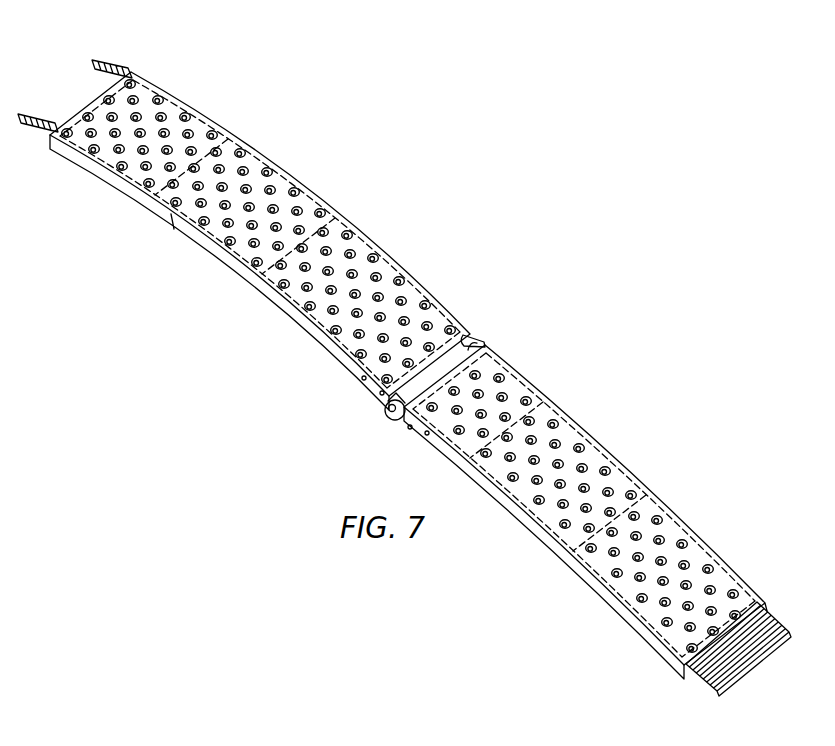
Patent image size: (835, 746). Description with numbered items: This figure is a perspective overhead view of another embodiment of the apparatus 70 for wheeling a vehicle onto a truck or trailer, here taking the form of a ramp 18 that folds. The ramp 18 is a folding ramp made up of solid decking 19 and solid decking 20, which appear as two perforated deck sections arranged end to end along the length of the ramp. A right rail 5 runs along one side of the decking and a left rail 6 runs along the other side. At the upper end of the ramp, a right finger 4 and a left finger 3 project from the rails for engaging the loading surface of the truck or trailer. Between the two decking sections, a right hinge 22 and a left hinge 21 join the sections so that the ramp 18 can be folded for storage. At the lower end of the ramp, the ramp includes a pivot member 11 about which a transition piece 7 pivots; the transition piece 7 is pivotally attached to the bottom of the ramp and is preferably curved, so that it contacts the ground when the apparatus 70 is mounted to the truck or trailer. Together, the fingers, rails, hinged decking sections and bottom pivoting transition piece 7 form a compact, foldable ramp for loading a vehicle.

The left finger 3 is at (47, 117).
The right finger 4 is at (110, 57).
The right rail 5 is at (587, 433).
The left rail 6 is at (173, 213).
The transition piece 7 is at (743, 672).
The pivot member 11 is at (672, 664).
The ramp 18 is at (334, 217).
The solid decking 19 is at (327, 316).
The solid decking 20 is at (537, 510).
The left hinge 21 is at (382, 408).
The right hinge 22 is at (484, 338).
The apparatus 70 is at (560, 312).